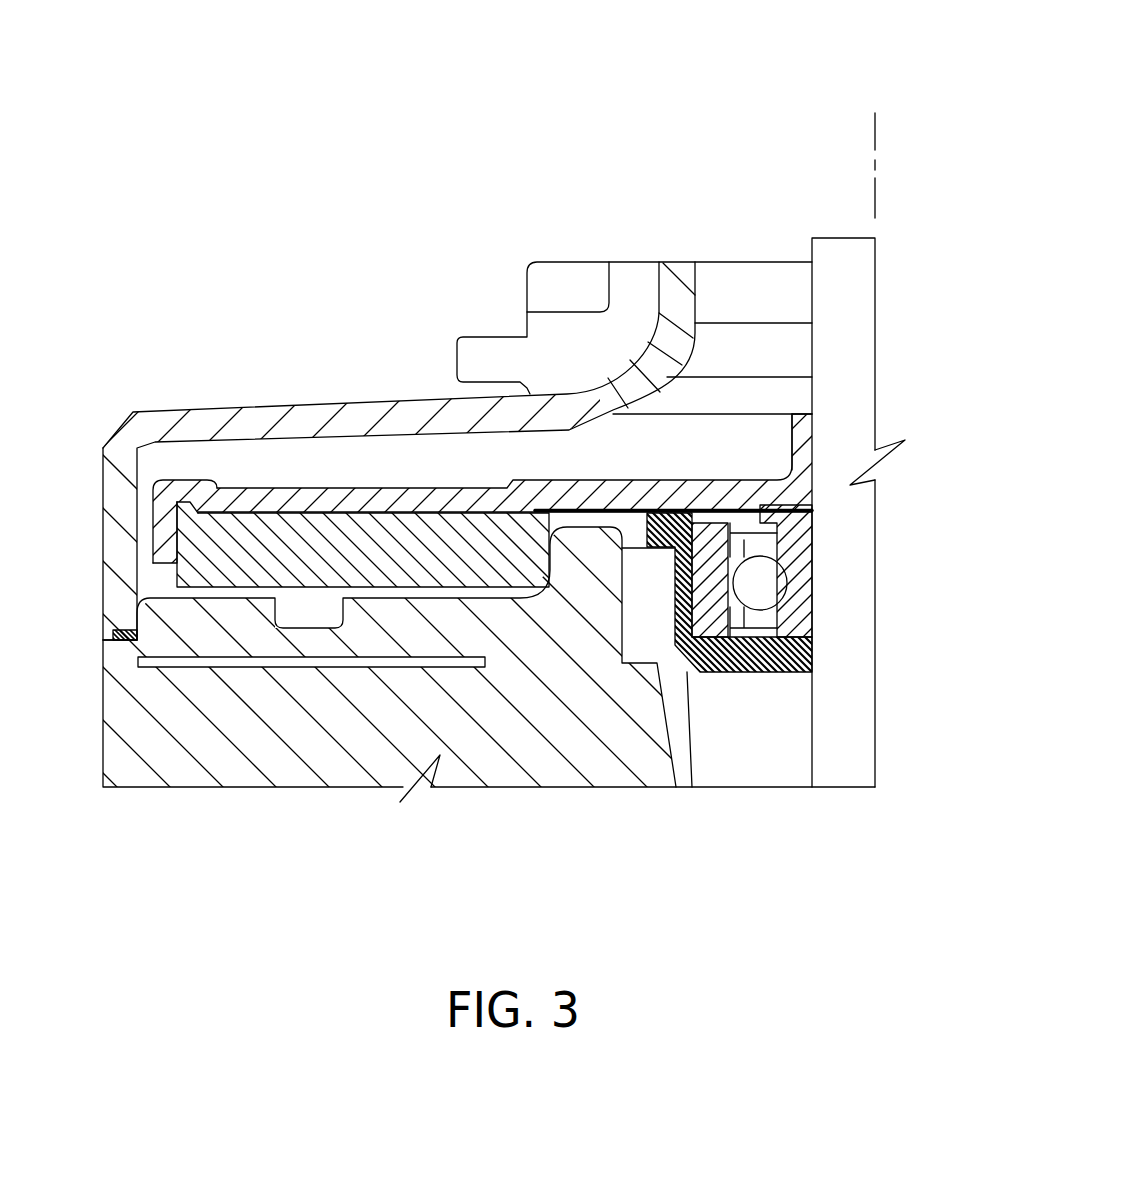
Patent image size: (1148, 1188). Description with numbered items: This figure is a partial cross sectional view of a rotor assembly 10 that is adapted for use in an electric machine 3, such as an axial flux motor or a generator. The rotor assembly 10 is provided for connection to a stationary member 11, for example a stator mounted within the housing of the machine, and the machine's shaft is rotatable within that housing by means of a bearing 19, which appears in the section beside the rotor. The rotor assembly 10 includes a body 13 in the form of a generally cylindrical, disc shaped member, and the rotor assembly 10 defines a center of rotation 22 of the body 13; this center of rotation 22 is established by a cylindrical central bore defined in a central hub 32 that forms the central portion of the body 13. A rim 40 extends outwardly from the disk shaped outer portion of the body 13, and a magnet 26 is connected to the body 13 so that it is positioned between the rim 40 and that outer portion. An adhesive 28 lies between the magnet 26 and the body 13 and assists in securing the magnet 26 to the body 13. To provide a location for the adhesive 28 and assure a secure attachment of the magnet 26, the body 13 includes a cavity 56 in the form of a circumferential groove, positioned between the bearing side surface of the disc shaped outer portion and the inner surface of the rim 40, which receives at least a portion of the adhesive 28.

The axial flux motor 3 is at (483, 438).
The rotor assembly 10 is at (483, 489).
The stator 11 is at (548, 713).
The body 13 is at (267, 485).
The bearing 19 is at (812, 573).
The center of rotation 22 is at (875, 143).
The magnet 26 is at (193, 587).
The adhesive 28 is at (182, 495).
The central hub 32 is at (790, 450).
The rim 40 is at (147, 540).
The cavity 56 is at (198, 518).